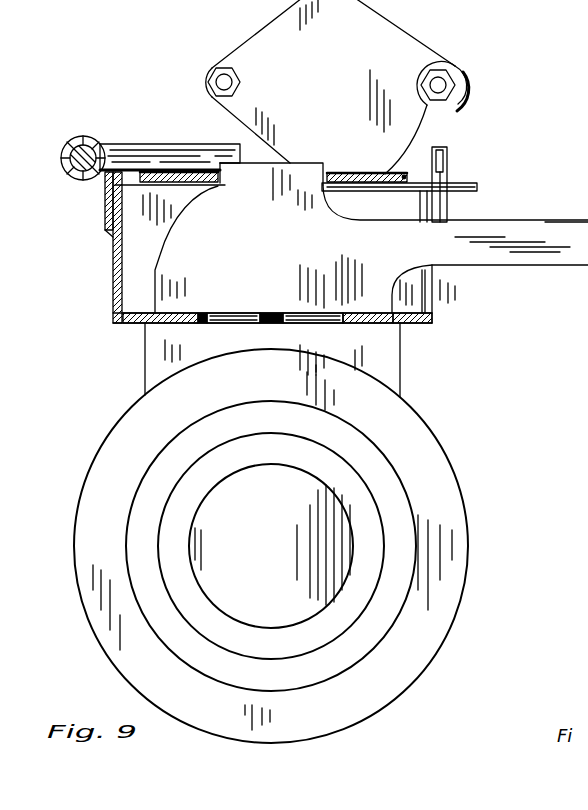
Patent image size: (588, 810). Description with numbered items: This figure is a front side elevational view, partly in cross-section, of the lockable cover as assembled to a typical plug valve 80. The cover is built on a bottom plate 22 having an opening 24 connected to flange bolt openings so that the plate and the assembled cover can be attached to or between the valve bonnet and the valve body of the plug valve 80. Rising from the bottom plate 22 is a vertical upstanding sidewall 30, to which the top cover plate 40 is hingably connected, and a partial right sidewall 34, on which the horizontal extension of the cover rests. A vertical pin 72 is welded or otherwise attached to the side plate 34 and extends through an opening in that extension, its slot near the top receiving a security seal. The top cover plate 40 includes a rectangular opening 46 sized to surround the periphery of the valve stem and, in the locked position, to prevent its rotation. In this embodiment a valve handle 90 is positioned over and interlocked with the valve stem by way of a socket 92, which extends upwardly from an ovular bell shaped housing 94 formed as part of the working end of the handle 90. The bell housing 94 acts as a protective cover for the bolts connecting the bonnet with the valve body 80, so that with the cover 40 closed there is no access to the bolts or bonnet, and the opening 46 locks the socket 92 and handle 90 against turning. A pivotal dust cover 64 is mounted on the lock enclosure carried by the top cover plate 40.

The bottom plate 22 is at (140, 326).
The opening 24 is at (347, 325).
The vertical upstanding sidewall 30 is at (114, 294).
The partial right sidewall 34 is at (432, 308).
The top cover plate 40 is at (407, 176).
The rectangular opening 46 is at (390, 166).
The dust cover 64 is at (324, 93).
The vertical pin 72 is at (448, 208).
The plug valve 80 is at (438, 447).
The valve handle 90 is at (545, 222).
The socket 92 is at (236, 175).
The ovular bell shaped housing 94 is at (157, 263).